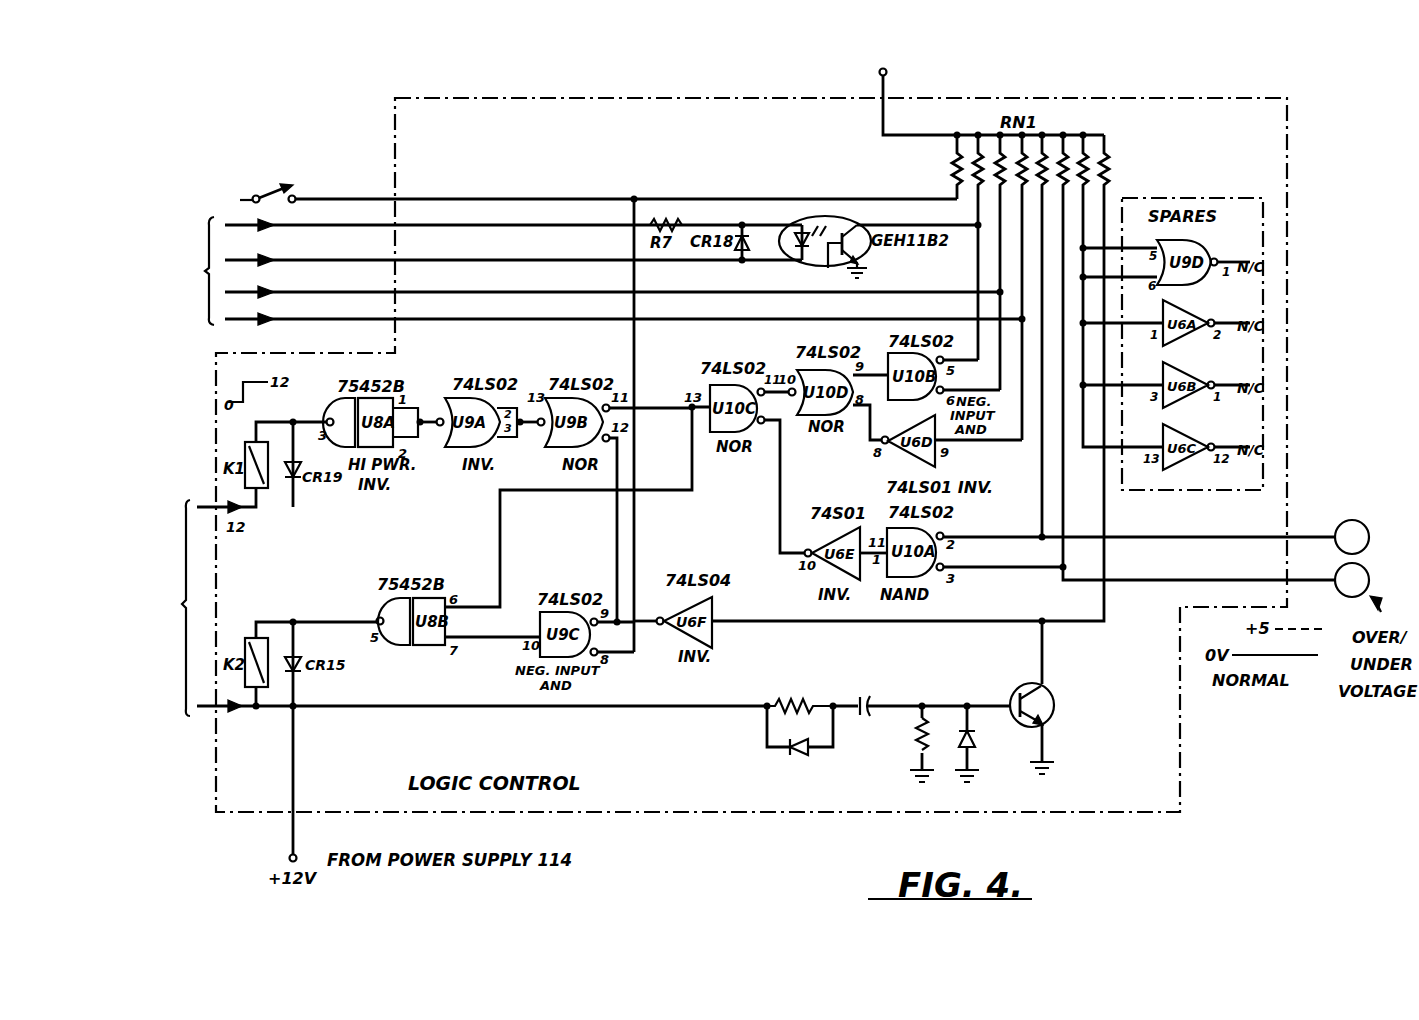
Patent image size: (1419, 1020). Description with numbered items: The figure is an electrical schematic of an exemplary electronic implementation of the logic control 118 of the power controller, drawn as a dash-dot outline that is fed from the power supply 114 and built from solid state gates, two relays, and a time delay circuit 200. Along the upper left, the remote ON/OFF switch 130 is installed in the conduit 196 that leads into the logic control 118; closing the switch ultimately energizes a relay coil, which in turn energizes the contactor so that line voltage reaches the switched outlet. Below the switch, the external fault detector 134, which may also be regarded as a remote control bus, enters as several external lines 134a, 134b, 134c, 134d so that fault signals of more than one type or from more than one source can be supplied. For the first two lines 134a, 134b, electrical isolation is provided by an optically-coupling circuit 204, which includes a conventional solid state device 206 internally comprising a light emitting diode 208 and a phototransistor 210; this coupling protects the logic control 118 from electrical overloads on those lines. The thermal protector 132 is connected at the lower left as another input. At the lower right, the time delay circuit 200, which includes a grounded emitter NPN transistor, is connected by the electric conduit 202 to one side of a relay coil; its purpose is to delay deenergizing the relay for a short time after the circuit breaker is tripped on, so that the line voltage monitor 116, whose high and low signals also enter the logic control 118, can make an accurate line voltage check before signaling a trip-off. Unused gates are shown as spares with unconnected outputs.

The logic control 118 is at (497, 89).
The remote ON/OFF switch 130 is at (288, 172).
The conduit 196 is at (328, 196).
The external fault detector 134 is at (144, 271).
The external line 134a is at (321, 223).
The external line 134b is at (321, 258).
The external line 134c is at (321, 291).
The external line 134d is at (321, 318).
The power supply 114 is at (1019, 89).
The line voltage monitor 116 is at (1357, 520).
The thermal protector 132 is at (126, 608).
The solid state device 206 is at (859, 222).
The light emitting diode 208 is at (790, 257).
The phototransistor 210 is at (876, 252).
The optically-coupling circuit 204 is at (882, 270).
The electric conduit 202 is at (433, 708).
The time delay circuit 200 is at (868, 780).